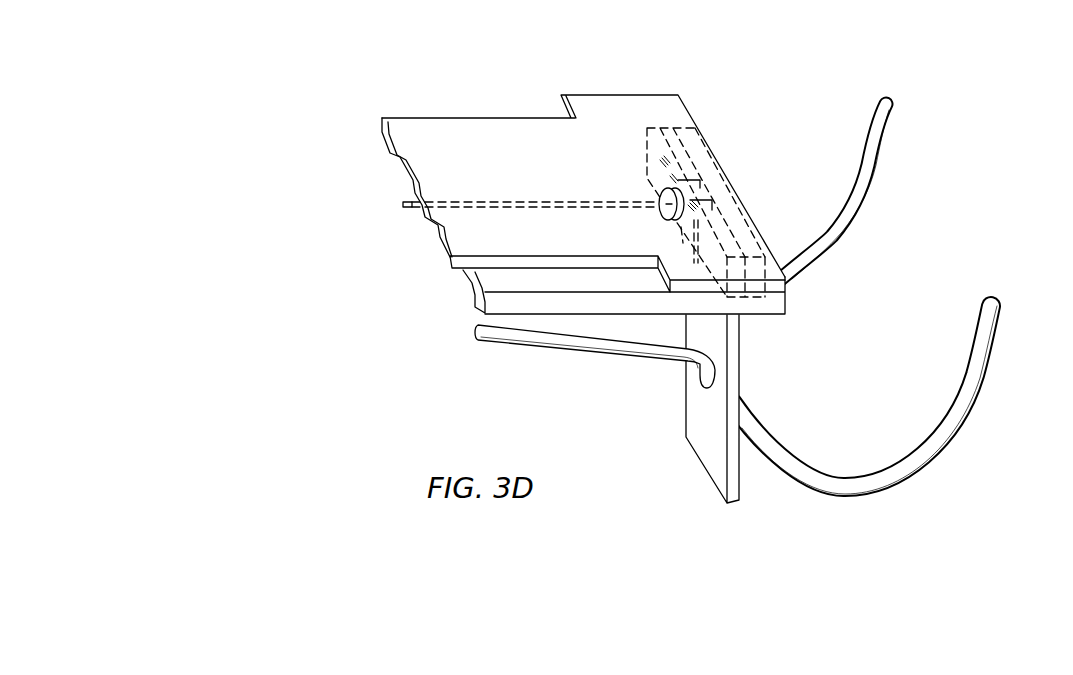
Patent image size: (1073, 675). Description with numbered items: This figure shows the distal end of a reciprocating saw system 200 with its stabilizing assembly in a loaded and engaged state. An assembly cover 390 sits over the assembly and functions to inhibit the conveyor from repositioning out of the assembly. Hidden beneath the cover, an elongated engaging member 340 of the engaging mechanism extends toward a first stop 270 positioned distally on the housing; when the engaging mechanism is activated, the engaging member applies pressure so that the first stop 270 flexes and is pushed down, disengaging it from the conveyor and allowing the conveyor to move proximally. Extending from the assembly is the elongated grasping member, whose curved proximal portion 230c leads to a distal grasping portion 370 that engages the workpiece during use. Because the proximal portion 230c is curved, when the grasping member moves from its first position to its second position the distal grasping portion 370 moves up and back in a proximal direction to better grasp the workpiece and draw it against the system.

The reciprocating saw system 200 is at (666, 66).
The assembly cover 390 is at (513, 122).
The elongated engaging member 340 is at (499, 201).
The first stop 270 is at (660, 186).
The proximal portion 230c is at (596, 348).
The distal grasping portion 370 is at (988, 338).